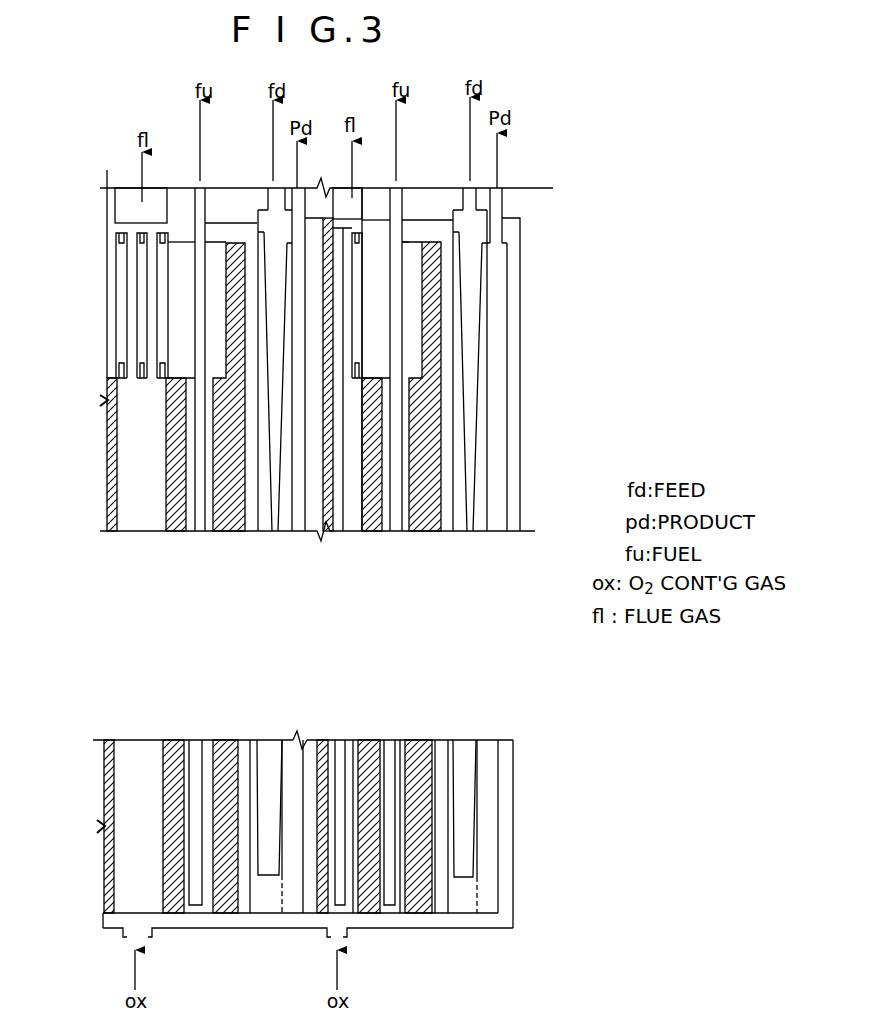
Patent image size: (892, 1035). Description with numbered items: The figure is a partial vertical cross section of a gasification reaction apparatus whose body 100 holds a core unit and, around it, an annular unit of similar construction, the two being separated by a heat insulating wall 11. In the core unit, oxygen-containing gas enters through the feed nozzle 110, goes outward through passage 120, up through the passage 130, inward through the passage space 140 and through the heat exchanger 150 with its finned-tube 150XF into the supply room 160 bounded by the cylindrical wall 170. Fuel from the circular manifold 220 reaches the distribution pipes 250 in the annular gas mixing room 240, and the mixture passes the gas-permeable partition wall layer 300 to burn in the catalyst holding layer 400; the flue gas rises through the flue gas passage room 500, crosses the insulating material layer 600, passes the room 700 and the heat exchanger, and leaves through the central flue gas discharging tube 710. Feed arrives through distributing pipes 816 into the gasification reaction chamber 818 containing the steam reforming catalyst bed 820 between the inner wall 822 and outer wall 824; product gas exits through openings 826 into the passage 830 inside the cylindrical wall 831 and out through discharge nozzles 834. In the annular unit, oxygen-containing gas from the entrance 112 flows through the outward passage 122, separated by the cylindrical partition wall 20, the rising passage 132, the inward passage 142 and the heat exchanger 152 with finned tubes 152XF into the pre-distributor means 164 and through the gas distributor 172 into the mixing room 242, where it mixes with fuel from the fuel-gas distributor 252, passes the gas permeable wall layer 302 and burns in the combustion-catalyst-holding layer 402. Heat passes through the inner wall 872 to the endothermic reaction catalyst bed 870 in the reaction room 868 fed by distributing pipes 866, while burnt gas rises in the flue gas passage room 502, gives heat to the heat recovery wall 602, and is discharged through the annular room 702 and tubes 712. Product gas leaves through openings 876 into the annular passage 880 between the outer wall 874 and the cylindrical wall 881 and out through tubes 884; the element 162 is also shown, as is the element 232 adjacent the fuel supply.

The heat insulating wall 11 is at (305, 920).
The cylindrical partition wall 20 is at (318, 905).
The body 100 is at (518, 513).
The feed nozzle 110 is at (133, 935).
The entrance 112 is at (352, 934).
The passage 120 is at (205, 915).
The outward passage 122 is at (427, 921).
The passage for oxygen-containing gas 130 is at (326, 535).
The rising passage 132 is at (505, 893).
The passage space 140 is at (183, 222).
The inward passage 142 is at (432, 232).
The heat exchanger 150 is at (117, 252).
The finned-tube 150XF is at (143, 282).
The heat exchanger 152 is at (365, 262).
The finned tubes 152XF is at (353, 278).
The oxygen containing gas supply room 160 is at (152, 499).
The wall 162 is at (357, 438).
The pre-distributor means 164 is at (347, 457).
The cylindrical wall 170 is at (171, 531).
The oxygen-containing gas distributor 172 is at (363, 740).
The circular manifold 220 is at (190, 188).
The fuel tube 232 is at (410, 205).
The annular gas mixing room 240 is at (183, 893).
The mixing room 242 is at (400, 906).
The distribution pipes 250 is at (193, 430).
The fuel-gas distributor 252 is at (402, 413).
The gas-permeable partition wall layer 300 is at (223, 740).
The gas permeable wall layer 302 is at (420, 531).
The catalyst holding layer 400 is at (238, 531).
The combustion-catalyst-holding layer 402 is at (427, 740).
The flue gas passage room 500 is at (252, 740).
The flue gas passage room 502 is at (447, 531).
The insulating material layer 600 is at (223, 348).
The heat recovery wall 602 is at (408, 325).
The room 700 is at (212, 312).
The annular room 702 is at (377, 307).
The central flue gas discharging tube 710 is at (132, 198).
The tubes 712 is at (357, 188).
The distributing pipes 816 is at (266, 186).
The gasification reaction chamber 818 is at (258, 190).
The steam reforming catalyst bed 820 is at (278, 531).
The inner wall 822 is at (263, 815).
The outer wall 824 is at (282, 793).
The openings 826 is at (282, 887).
The passage for product gas 830 is at (297, 740).
The cylindrical wall 831 is at (300, 778).
The discharge nozzles 834 is at (306, 190).
The distributing pipes 866 is at (478, 198).
The reaction room 868 is at (463, 190).
The endothermic reaction catalyst bed 870 is at (463, 740).
The inner endothermic-reaction-room wall 872 is at (450, 800).
The outer wall of the reaction room 874 is at (480, 787).
The openings 876 is at (477, 900).
The annular passage 880 is at (495, 531).
The cylindrical wall 881 is at (498, 762).
The tubes 884 is at (502, 212).